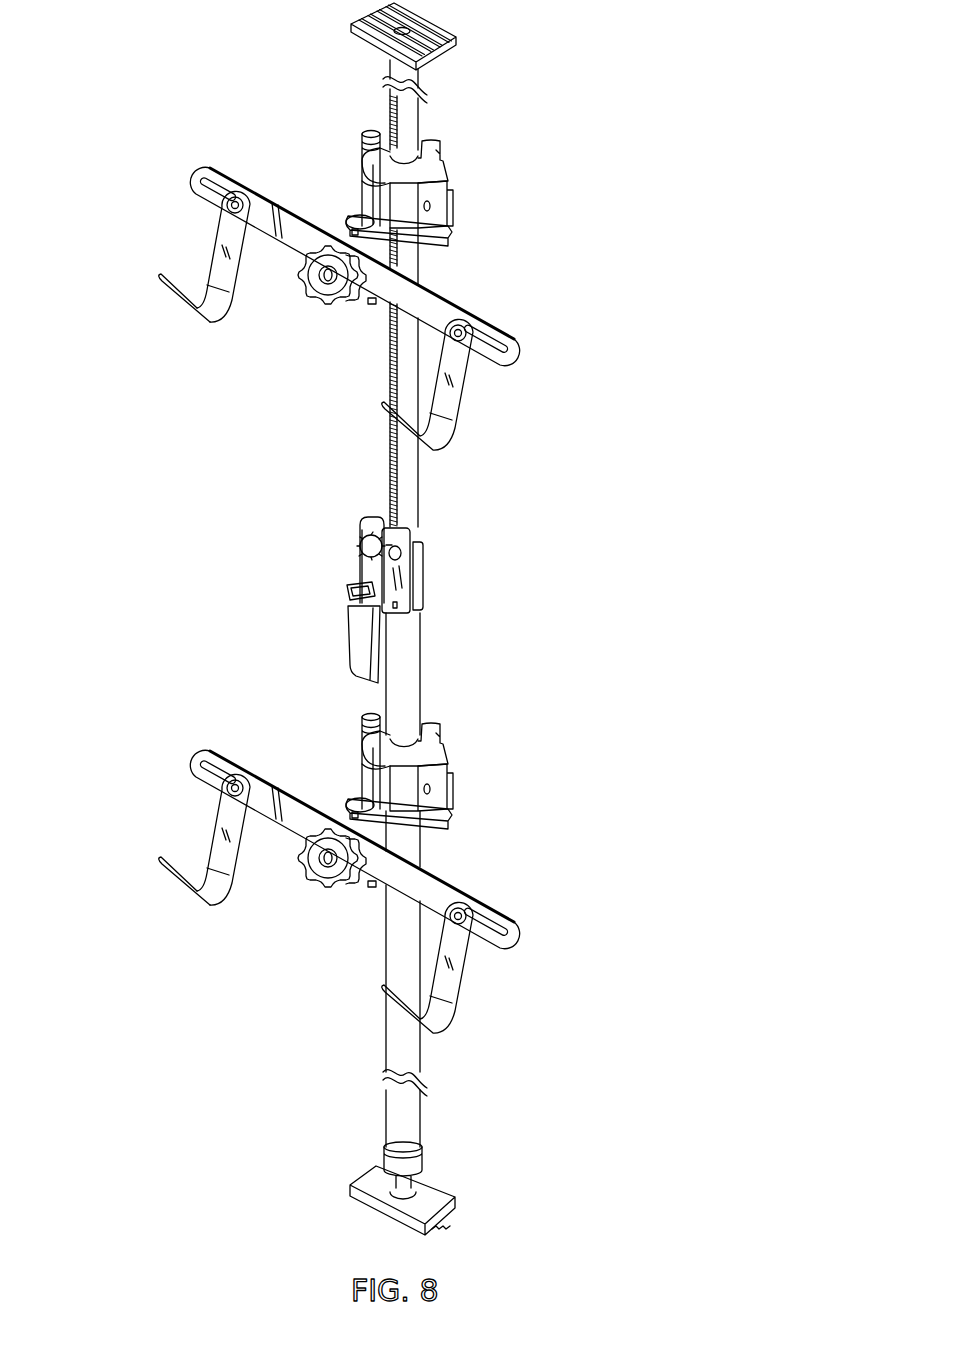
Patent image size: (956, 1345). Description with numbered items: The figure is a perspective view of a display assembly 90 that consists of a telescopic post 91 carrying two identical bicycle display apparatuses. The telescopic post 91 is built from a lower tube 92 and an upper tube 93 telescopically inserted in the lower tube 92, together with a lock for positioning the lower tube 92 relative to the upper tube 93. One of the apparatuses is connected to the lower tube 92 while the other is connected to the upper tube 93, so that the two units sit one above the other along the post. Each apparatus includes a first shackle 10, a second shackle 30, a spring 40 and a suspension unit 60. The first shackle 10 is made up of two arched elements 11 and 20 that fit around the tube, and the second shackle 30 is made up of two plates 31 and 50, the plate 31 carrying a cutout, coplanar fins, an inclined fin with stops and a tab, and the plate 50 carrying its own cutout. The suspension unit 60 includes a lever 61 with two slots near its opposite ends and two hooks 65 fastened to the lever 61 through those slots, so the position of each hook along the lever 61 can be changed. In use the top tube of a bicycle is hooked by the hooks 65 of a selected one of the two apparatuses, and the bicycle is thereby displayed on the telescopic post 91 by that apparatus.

The first shackle 10 is at (509, 118).
The arched element 11 is at (392, 172).
The arched element 20 is at (430, 163).
The second shackle 30 is at (547, 222).
The plate 31 is at (400, 243).
The spring 40 is at (408, 238).
The plate 50 is at (440, 233).
The suspension unit 60 is at (112, 123).
The lever 61 is at (210, 173).
The hook 65 is at (227, 255).
The display assembly 90 is at (545, 147).
The telescopic post 91 is at (518, 655).
The lower tube 92 is at (398, 675).
The upper tube 93 is at (403, 513).